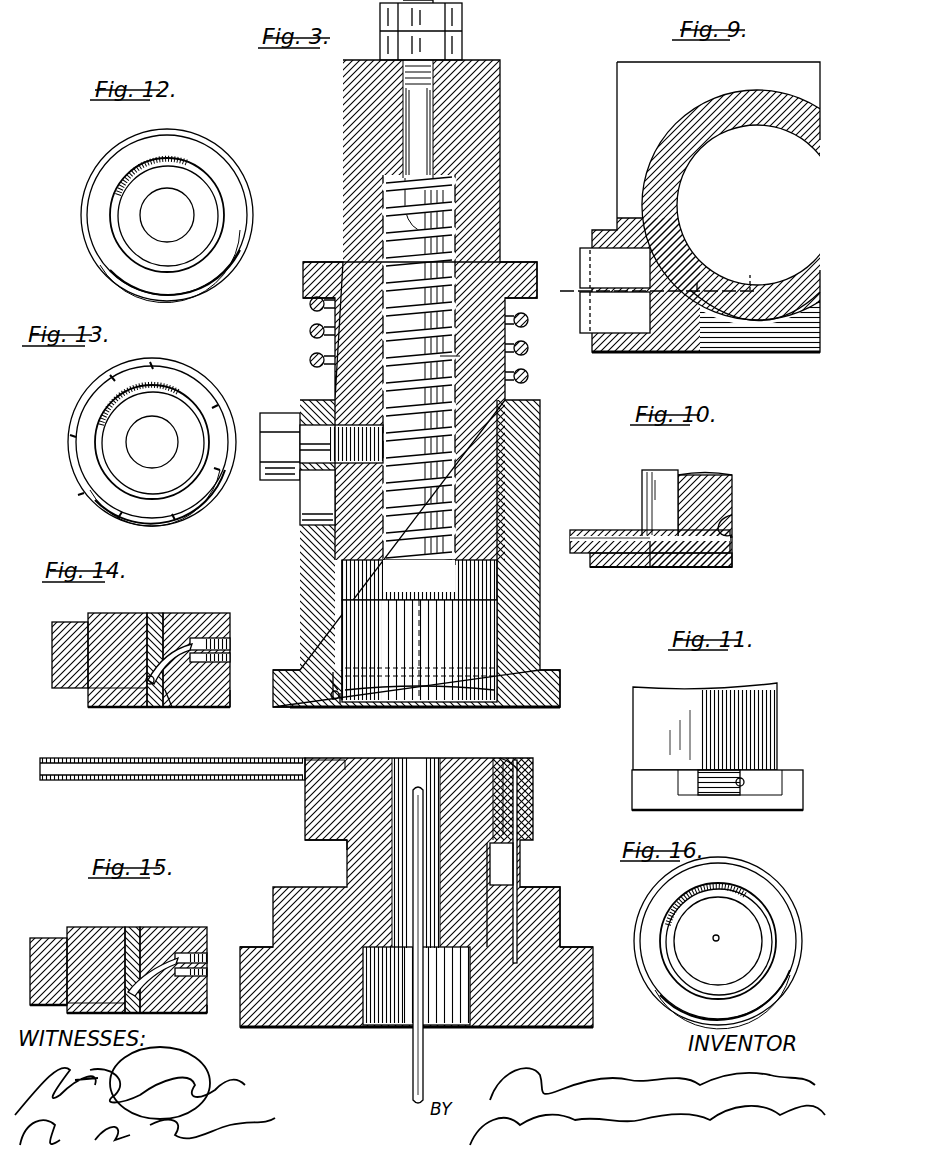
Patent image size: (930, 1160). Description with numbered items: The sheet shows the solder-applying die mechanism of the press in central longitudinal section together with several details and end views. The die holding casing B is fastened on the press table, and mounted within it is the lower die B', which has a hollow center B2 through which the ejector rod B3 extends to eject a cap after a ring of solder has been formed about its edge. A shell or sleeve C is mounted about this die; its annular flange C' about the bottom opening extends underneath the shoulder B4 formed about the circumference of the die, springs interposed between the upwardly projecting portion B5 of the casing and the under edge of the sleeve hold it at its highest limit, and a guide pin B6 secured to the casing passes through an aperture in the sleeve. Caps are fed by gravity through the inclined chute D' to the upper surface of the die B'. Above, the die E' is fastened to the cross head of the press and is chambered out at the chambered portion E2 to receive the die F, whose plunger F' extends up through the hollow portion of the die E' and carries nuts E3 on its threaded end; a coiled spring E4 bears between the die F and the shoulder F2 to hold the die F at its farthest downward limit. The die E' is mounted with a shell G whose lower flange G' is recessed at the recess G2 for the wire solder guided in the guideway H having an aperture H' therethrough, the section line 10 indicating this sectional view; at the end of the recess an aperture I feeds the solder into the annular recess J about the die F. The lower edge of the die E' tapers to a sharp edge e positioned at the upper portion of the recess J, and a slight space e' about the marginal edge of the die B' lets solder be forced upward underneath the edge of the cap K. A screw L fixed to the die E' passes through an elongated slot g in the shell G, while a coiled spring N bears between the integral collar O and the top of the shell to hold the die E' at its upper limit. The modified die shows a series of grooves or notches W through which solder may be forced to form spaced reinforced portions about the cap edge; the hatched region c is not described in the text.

In FIG. 3, the nuts E3 is at (455, 45).
In FIG. 3, the die E' is at (420, 230).
In FIG. 14, the die E' is at (140, 647).
In FIG. 15, the die E' is at (134, 950).
In FIG. 3, the shoulder F2 is at (455, 180).
In FIG. 3, the coiled spring E4 is at (450, 268).
In FIG. 3, the collar O is at (315, 262).
In FIG. 3, the coiled spring N is at (310, 331).
In FIG. 3, the plunger F' is at (454, 528).
In FIG. 3, the screw L is at (313, 445).
In FIG. 3, the shell G is at (424, 553).
In FIG. 9, the shell G is at (757, 221).
In FIG. 10, the shell G is at (712, 516).
In FIG. 11, the shell G is at (715, 717).
In FIG. 3, the elongated slot g is at (313, 513).
In FIG. 3, the chambered portion E2 is at (346, 574).
In FIG. 3, the die F is at (379, 651).
In FIG. 14, the die F is at (159, 643).
In FIG. 15, the die F is at (137, 950).
In FIG. 3, the sharp edge e is at (301, 671).
In FIG. 14, the sharp edge e is at (130, 706).
In FIG. 3, the flange G' is at (432, 674).
In FIG. 14, the flange G' is at (63, 669).
In FIG. 15, the flange G' is at (48, 948).
In FIG. 9, the flange G' is at (706, 207).
In FIG. 10, the flange G' is at (661, 576).
In FIG. 11, the flange G' is at (702, 789).
In FIG. 3, the aperture I is at (333, 700).
In FIG. 9, the aperture I is at (697, 292).
In FIG. 10, the aperture I is at (735, 530).
In FIG. 11, the aperture I is at (740, 787).
In FIG. 3, the annular recess J is at (340, 704).
In FIG. 3, the chute D' is at (172, 771).
In FIG. 3, the shell or sleeve C is at (416, 892).
In FIG. 3, the annular flange C' is at (463, 783).
In FIG. 3, the die B' is at (303, 828).
In FIG. 12, the die B' is at (152, 216).
In FIG. 14, the die B' is at (221, 713).
In FIG. 15, the die B' is at (212, 1024).
In FIG. 3, the shoulder B4 is at (348, 842).
In FIG. 3, the guide pin B6 is at (522, 858).
In FIG. 3, the upwardly projecting portion B5 is at (545, 906).
In FIG. 3, the hollow center B2 is at (416, 891).
In FIG. 12, the hollow center B2 is at (167, 215).
In FIG. 13, the hollow center B2 is at (152, 442).
In FIG. 3, the die holding casing B is at (416, 1004).
In FIG. 3, the ejector rod B3 is at (424, 1054).
In FIG. 3, the space e' is at (516, 747).
In FIG. 14, the space e' is at (167, 713).
In FIG. 13, the grooves or notches W is at (150, 362).
In FIG. 14, the recess c is at (98, 708).
In FIG. 15, the recess c is at (70, 1008).
In FIG. 14, the cap K is at (190, 614).
In FIG. 16, the cap K is at (718, 943).
In FIG. 9, the guideway H is at (615, 312).
In FIG. 10, the guideway H is at (650, 520).
In FIG. 9, the aperture H' is at (615, 268).
In FIG. 10, the aperture H' is at (656, 486).
In FIG. 9, the section line 10 is at (780, 280).
In FIG. 11, the recess G2 is at (770, 780).